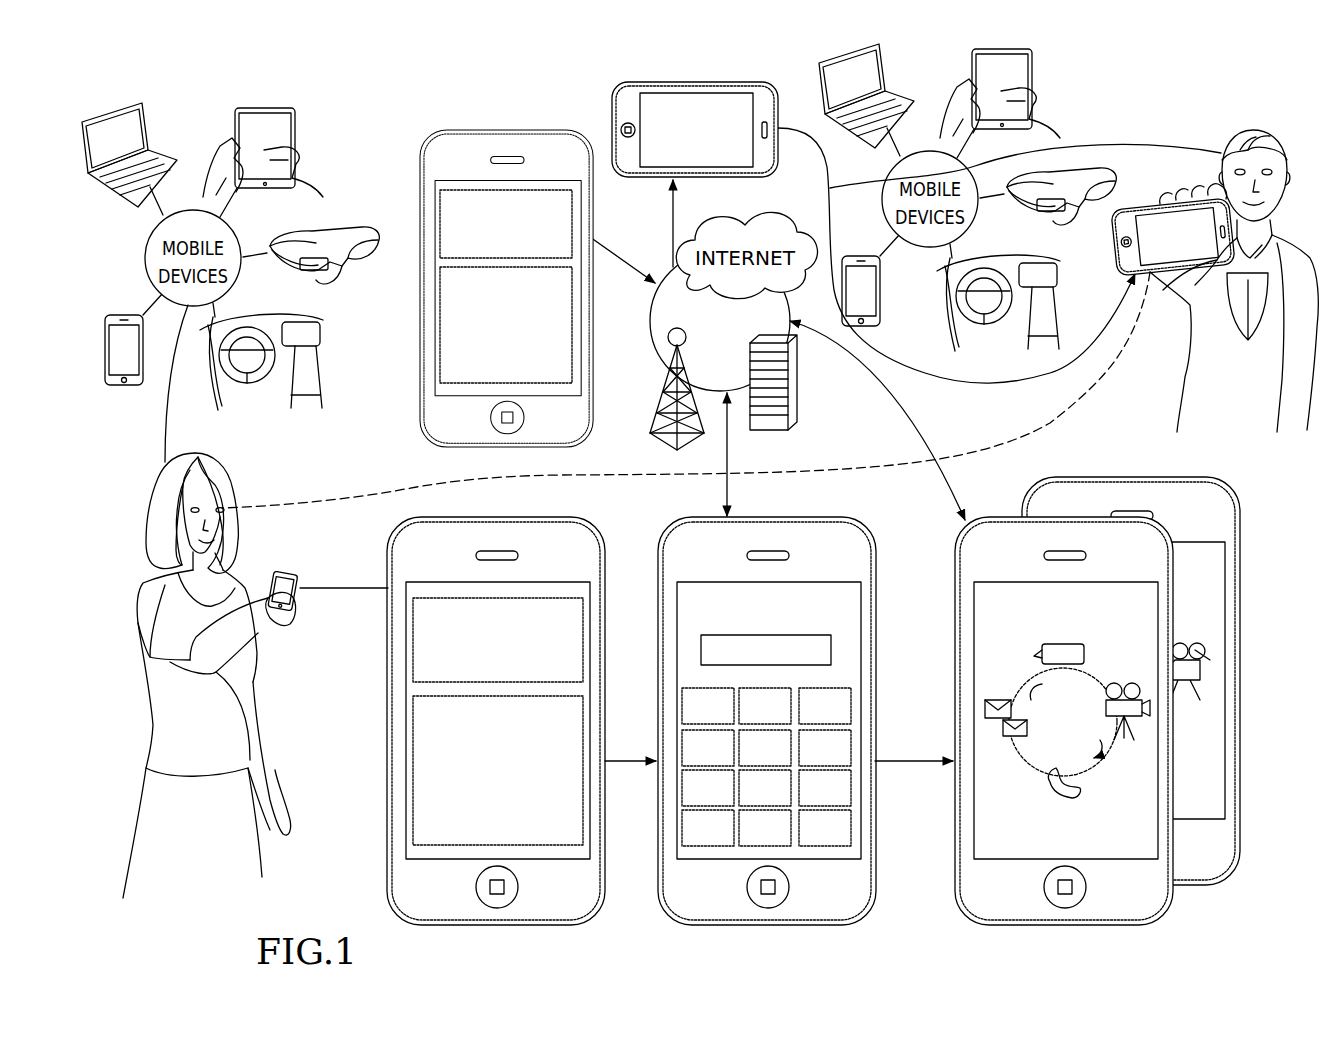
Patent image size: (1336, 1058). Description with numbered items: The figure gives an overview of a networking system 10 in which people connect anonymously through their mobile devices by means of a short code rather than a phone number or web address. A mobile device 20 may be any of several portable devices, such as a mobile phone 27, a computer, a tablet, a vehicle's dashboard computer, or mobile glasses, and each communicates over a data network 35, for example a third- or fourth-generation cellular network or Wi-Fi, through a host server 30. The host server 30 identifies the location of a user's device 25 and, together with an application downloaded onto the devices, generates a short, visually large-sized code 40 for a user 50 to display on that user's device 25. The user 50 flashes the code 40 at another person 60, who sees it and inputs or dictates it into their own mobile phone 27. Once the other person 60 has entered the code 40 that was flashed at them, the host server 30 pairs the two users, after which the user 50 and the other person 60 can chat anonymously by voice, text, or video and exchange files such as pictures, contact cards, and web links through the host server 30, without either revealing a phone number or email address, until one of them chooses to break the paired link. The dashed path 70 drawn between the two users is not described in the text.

The networking system 10 is at (404, 85).
The mobile device 20 is at (183, 118).
The user's device 25 is at (1113, 265).
The mobile phone 27 is at (282, 576).
The host server 30 is at (797, 393).
The data network 35 is at (646, 397).
The code 40 is at (673, 103).
The user 50 is at (1259, 126).
The another person 60 is at (222, 457).
The line of sight between users 70 is at (378, 492).